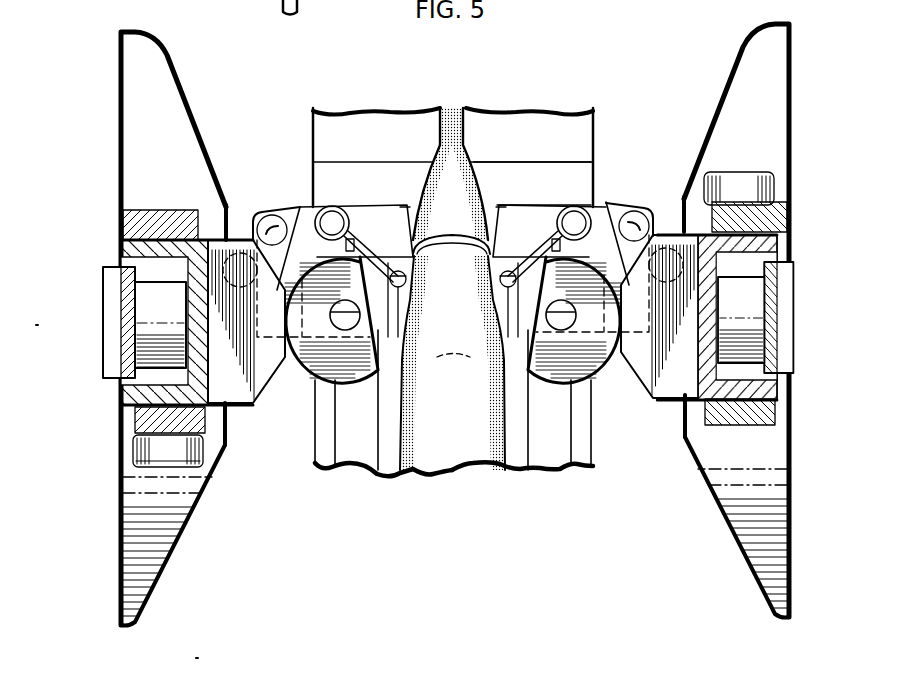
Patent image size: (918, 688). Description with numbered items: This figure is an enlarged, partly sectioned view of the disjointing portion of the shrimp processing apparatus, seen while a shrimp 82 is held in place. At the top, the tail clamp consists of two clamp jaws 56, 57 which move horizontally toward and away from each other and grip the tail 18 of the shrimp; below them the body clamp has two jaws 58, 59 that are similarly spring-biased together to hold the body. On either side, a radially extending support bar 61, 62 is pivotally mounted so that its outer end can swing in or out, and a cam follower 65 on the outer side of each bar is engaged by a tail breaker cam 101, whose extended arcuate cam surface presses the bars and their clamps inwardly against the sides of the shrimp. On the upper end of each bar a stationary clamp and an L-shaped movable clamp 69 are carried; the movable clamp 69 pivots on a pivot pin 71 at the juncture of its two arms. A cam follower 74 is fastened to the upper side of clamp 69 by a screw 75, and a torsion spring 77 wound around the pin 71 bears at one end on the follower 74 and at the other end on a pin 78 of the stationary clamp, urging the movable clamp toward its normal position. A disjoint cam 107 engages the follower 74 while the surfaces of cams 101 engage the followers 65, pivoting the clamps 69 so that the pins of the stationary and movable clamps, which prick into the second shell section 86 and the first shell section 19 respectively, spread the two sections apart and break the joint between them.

The tail 18 is at (450, 118).
The first shell section 19 is at (458, 177).
The clamp jaw 56 is at (313, 108).
The clamp jaw 57 is at (586, 130).
The jaw 58 is at (383, 472).
The jaw 59 is at (560, 472).
The support bar 61 is at (292, 206).
The support bar 62 is at (607, 203).
The cam follower 65 is at (240, 252).
The movable clamp 69 is at (388, 200).
The pivot pin 71 is at (343, 212).
The cam follower 74 is at (305, 352).
The screw 75 is at (347, 330).
The torsion spring 77 is at (335, 222).
The pin 78 is at (494, 340).
The shrimp 82 is at (469, 468).
The second shell section 86 is at (443, 340).
The tail breaker cam 101 is at (228, 440).
The disjoint cam 107 is at (271, 402).